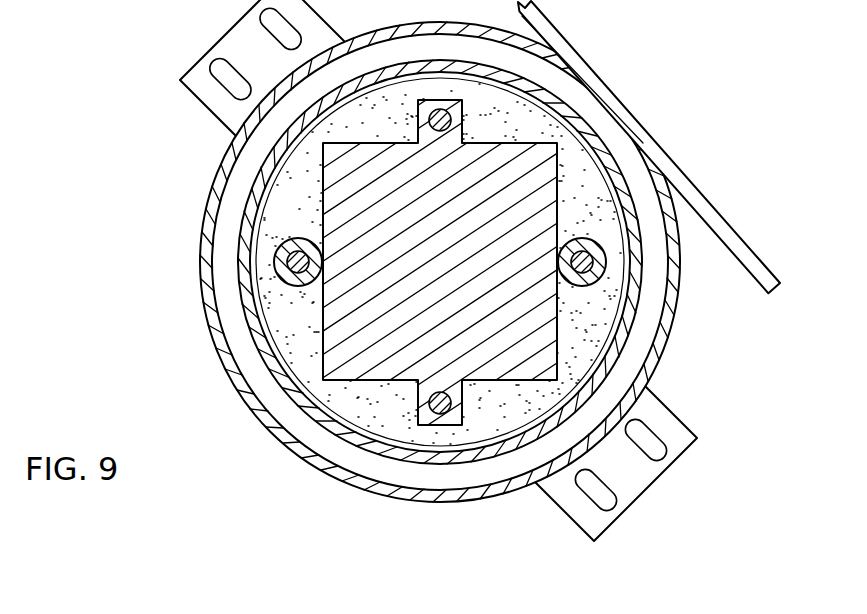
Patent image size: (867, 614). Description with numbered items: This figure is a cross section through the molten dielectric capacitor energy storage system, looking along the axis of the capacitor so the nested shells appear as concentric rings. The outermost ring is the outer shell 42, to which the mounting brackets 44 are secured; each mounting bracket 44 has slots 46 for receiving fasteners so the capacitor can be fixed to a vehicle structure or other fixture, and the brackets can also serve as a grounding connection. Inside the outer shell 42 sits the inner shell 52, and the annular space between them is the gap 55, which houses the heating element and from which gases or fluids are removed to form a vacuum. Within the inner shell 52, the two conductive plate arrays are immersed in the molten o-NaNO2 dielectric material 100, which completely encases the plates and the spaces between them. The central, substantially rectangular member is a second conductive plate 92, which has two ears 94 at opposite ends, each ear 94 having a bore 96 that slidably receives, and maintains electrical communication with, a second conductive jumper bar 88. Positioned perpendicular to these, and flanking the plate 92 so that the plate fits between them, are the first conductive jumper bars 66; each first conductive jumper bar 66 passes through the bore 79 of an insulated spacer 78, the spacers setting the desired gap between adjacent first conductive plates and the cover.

The outer shell 42 is at (678, 299).
The mounting brackets 44 is at (728, 220).
The slots 46 is at (617, 495).
The inner shell 52 is at (252, 198).
The gap 55 is at (638, 340).
The first conductive jumper bar 66 is at (300, 285).
The insulated spacers 78 is at (292, 278).
The bore 79 is at (292, 262).
The second conductive jumper bar 88 is at (450, 418).
The second conductive plate 92 is at (357, 380).
The ears 94 is at (433, 428).
The bore 96 is at (437, 410).
The molten o-NaNO2 dielectric material 100 is at (330, 130).